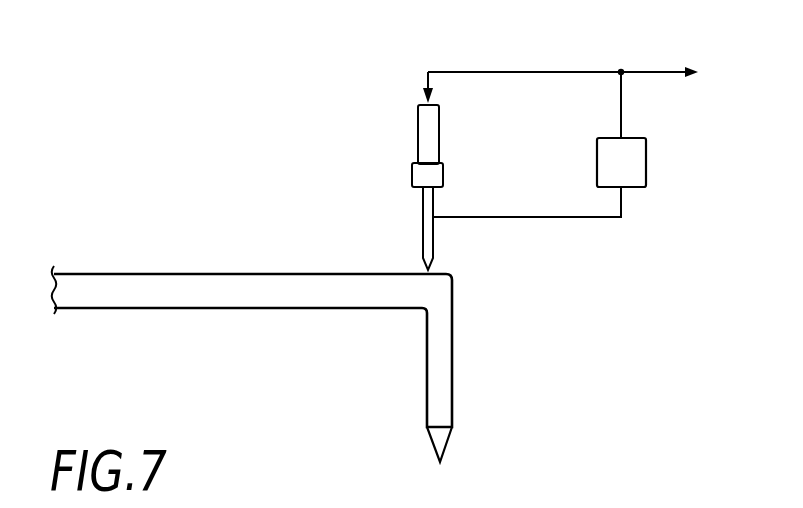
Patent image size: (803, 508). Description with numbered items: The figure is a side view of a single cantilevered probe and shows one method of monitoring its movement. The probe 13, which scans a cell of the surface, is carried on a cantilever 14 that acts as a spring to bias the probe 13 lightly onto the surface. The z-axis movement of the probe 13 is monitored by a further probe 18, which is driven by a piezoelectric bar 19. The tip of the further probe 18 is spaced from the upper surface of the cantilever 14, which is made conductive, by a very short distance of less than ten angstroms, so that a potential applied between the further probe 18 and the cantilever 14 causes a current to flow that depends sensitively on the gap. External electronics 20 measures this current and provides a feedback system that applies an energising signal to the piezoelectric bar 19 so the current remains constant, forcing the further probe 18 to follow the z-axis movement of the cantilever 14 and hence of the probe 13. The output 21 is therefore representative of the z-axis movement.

The probe 13 is at (438, 377).
The cantilever 14 is at (293, 288).
The further probe 18 is at (423, 237).
The piezoelectric bar 19 is at (423, 136).
The external electronics 20 is at (625, 167).
The output 21 is at (692, 62).